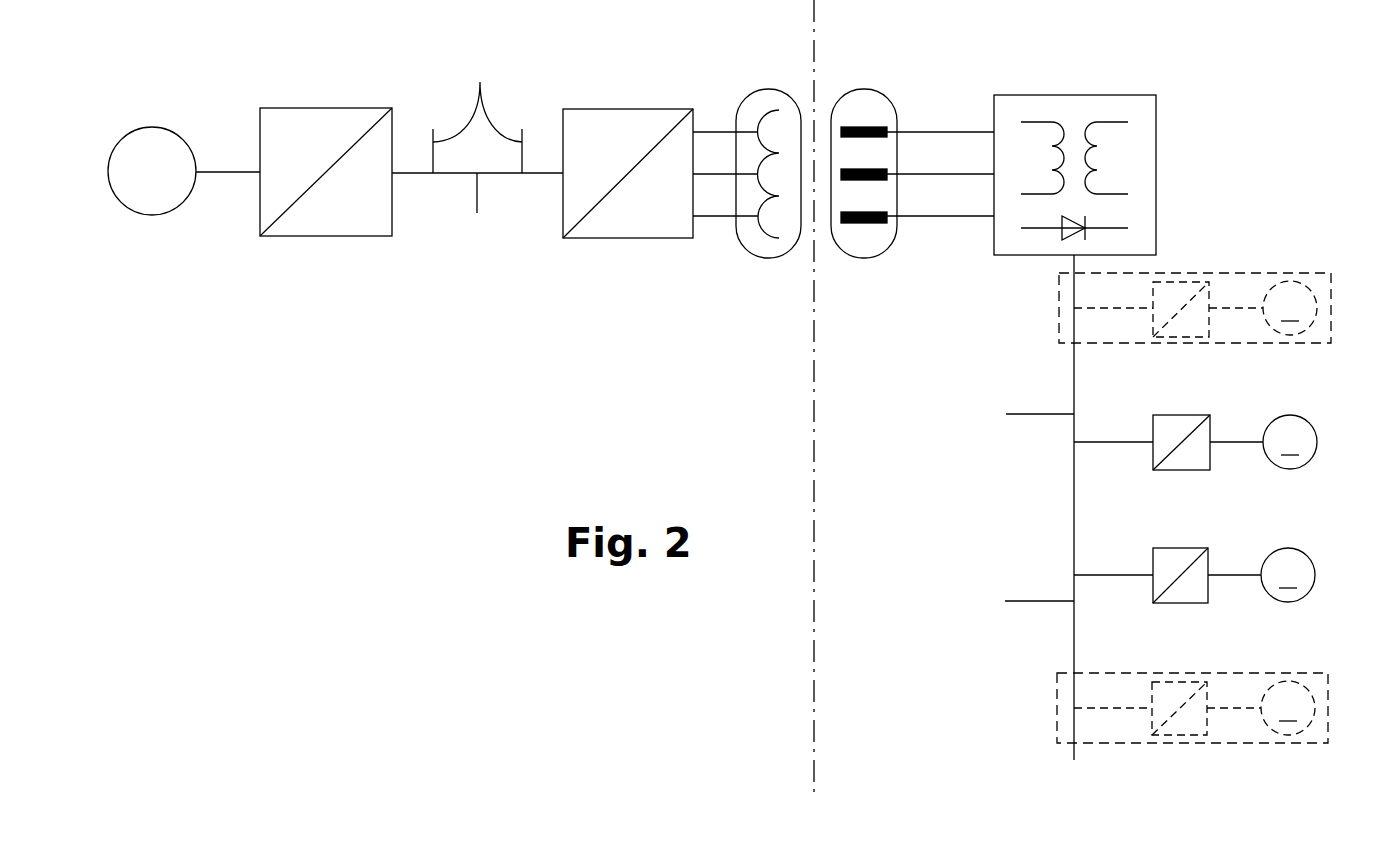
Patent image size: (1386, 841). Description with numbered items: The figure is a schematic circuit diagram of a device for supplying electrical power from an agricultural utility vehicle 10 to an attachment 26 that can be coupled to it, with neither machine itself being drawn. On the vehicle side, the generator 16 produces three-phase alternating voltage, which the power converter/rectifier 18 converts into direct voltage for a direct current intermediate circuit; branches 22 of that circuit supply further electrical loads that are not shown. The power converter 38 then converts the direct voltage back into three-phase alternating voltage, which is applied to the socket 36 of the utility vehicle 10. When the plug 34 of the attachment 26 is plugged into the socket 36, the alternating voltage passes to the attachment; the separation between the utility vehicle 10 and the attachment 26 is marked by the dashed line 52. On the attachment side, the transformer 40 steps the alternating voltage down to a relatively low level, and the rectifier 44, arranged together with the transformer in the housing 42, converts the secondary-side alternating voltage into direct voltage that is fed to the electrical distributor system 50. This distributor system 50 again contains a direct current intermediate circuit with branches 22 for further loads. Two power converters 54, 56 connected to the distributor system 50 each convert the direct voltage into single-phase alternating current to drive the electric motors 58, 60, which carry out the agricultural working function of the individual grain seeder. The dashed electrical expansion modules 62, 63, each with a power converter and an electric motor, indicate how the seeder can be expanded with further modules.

The agricultural utility vehicle 10 is at (282, 544).
The generator 16 is at (157, 214).
The power converter/rectifier 18 is at (325, 237).
The branches 22 is at (1165, 645).
The attachment 26 is at (865, 583).
The plug 34 is at (863, 89).
The socket 36 is at (767, 90).
The power converter 38 is at (627, 109).
The transformer 40 is at (1057, 125).
The housing 42 is at (1109, 181).
The rectifier 44 is at (1060, 230).
The electrical distributor system 50 is at (1082, 352).
The dashed line 52 is at (812, 527).
The power converter 54 is at (1190, 470).
The power converter 56 is at (1195, 603).
The electric motor 58 is at (1293, 469).
The electric motor 60 is at (1308, 597).
The electrical expansion module 62 is at (1283, 273).
The electrical expansion module 63 is at (1173, 745).